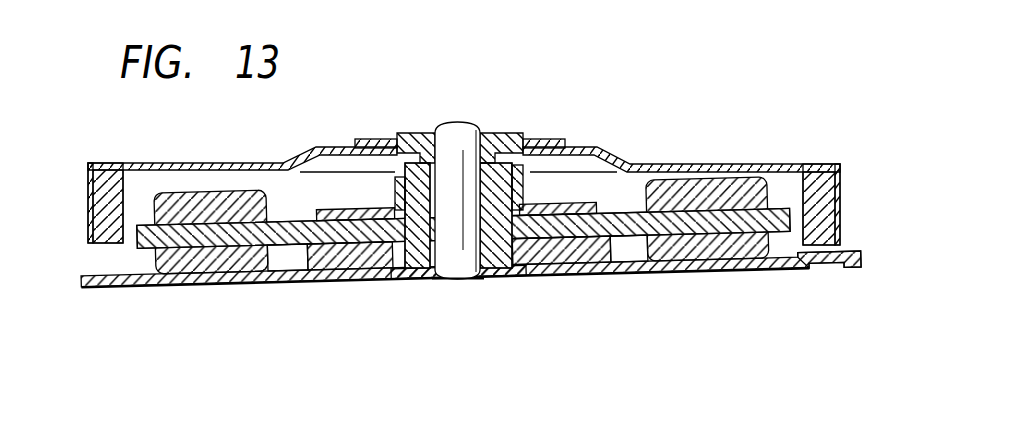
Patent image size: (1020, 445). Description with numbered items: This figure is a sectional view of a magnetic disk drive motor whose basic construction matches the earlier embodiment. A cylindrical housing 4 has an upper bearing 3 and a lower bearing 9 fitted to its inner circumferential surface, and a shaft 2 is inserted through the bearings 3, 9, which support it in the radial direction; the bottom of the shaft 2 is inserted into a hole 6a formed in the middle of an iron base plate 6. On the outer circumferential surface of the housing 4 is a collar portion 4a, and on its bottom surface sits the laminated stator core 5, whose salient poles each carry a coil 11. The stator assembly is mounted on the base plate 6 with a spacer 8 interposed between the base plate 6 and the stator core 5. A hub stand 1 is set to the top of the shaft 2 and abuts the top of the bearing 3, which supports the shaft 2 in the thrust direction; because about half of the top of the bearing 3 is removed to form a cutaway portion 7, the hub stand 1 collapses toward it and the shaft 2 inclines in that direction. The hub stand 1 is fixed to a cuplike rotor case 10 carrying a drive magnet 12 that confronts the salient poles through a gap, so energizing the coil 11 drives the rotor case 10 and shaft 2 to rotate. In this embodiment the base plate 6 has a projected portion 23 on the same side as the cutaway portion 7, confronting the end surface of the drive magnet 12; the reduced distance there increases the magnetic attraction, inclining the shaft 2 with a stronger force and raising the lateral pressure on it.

The hub stand 1 is at (506, 133).
The shaft 2 is at (462, 130).
The upper bearing 3 is at (420, 152).
The housing 4 is at (522, 200).
The collar portion 4a is at (330, 215).
The stator core 5 is at (288, 257).
The base plate 6 is at (150, 283).
The hole 6a is at (477, 279).
The cutaway portion 7 is at (512, 164).
The spacer 8 is at (365, 266).
The lower bearing 9 is at (412, 270).
The rotor case 10 is at (680, 167).
The coil 11 is at (217, 268).
The drive magnet 12 is at (88, 197).
The projected portion 23 is at (827, 272).